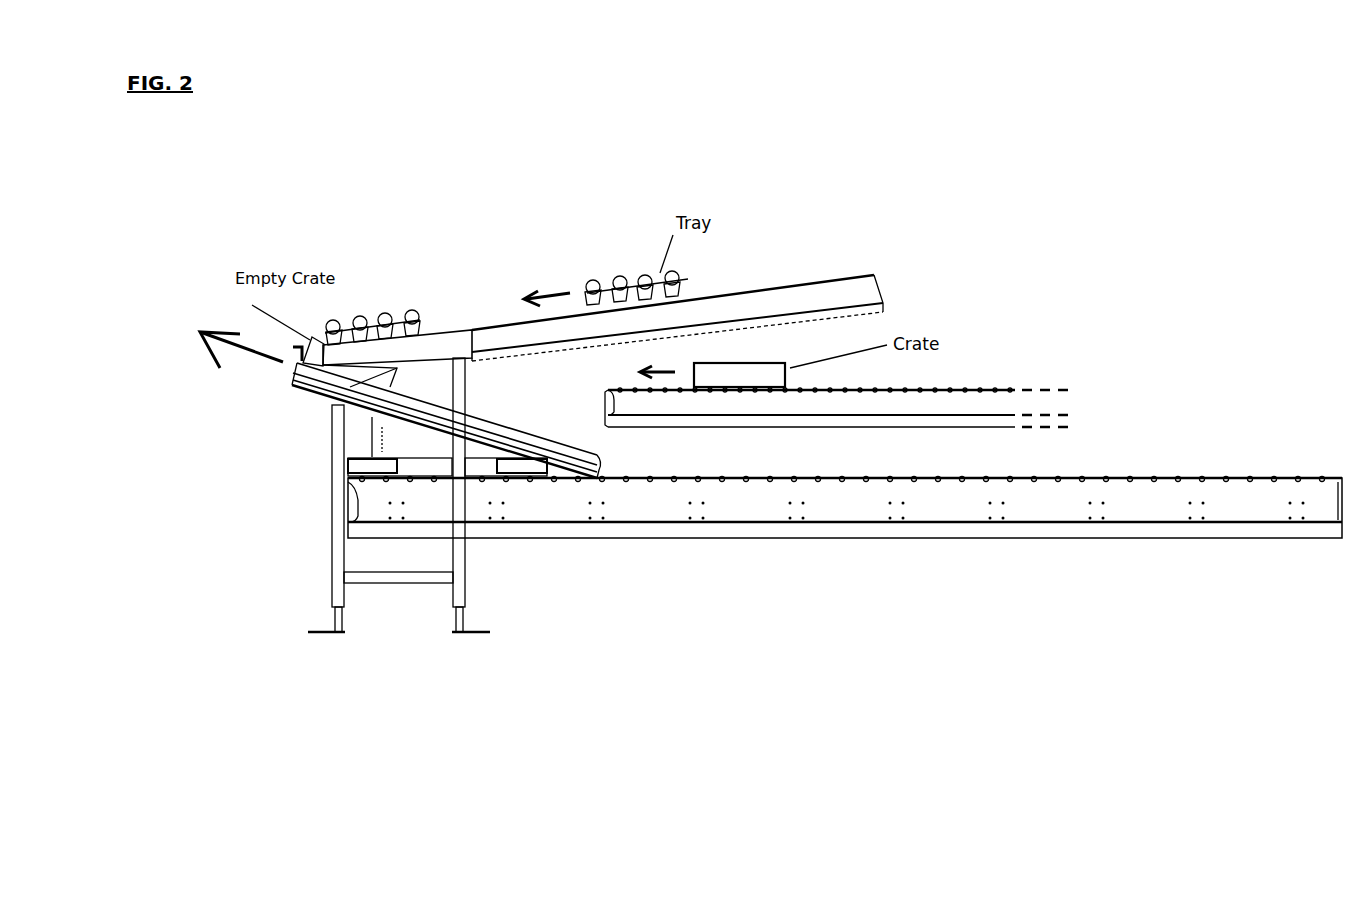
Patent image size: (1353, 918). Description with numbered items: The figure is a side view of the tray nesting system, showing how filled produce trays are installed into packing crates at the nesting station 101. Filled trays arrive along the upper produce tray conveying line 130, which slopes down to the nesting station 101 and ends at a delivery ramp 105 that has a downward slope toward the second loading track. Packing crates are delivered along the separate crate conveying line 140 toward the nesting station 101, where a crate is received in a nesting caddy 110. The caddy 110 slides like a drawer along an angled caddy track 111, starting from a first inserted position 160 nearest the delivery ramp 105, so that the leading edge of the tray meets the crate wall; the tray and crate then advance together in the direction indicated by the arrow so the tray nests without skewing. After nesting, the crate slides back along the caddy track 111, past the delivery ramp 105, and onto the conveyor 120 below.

The nesting station 101 is at (404, 287).
The delivery ramp 105 is at (450, 325).
The nesting caddy 110 is at (292, 383).
The caddy track 111 is at (306, 393).
The conveyor 120 is at (783, 544).
The produce tray conveying line 130 is at (877, 270).
The packing crate conveying line 140 is at (965, 390).
The first inserted position 160 is at (296, 393).